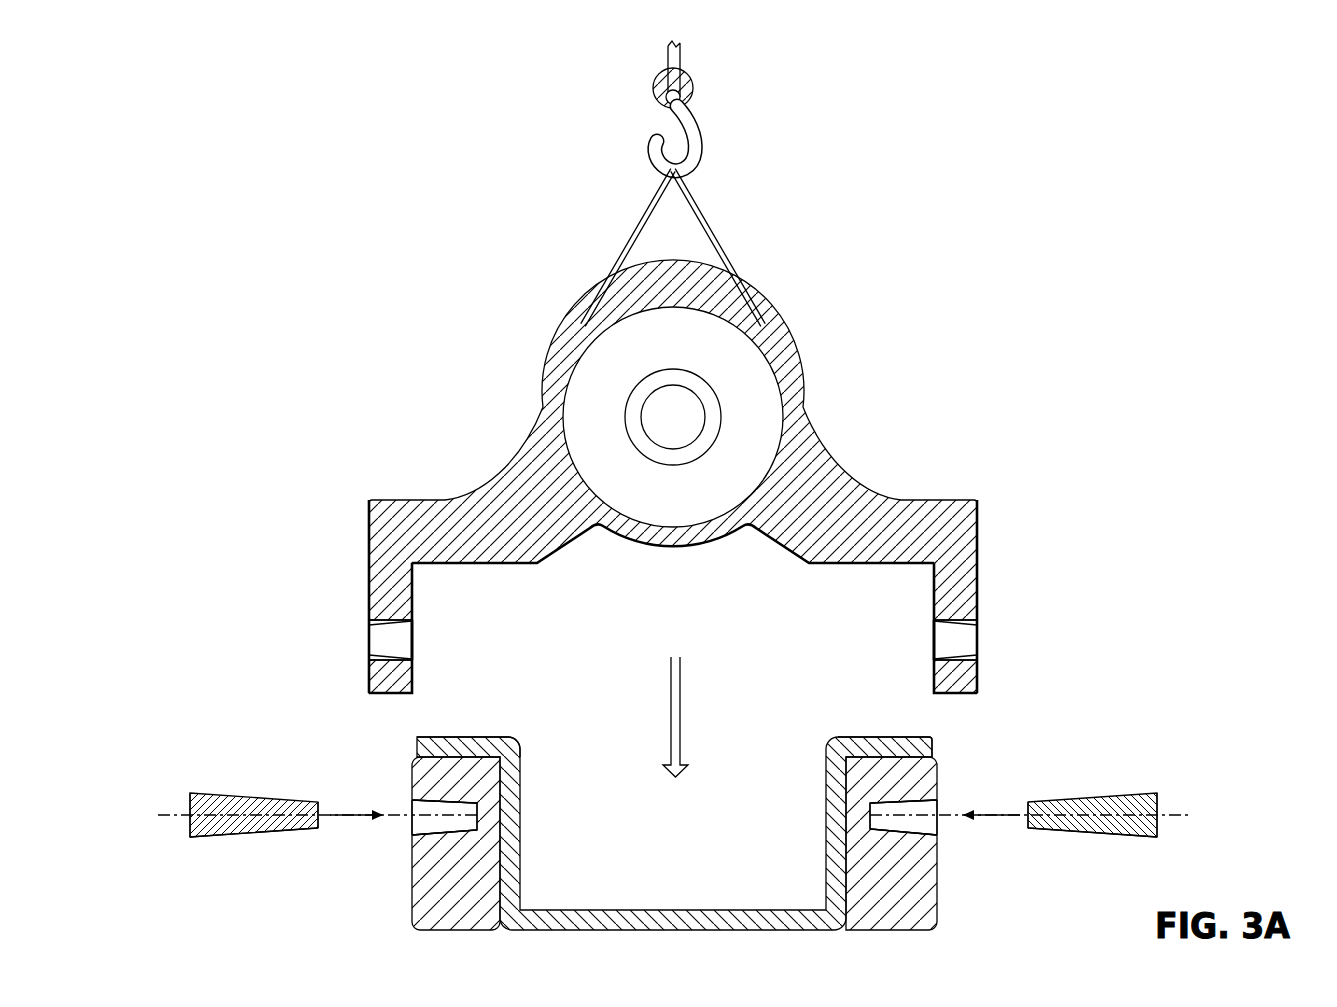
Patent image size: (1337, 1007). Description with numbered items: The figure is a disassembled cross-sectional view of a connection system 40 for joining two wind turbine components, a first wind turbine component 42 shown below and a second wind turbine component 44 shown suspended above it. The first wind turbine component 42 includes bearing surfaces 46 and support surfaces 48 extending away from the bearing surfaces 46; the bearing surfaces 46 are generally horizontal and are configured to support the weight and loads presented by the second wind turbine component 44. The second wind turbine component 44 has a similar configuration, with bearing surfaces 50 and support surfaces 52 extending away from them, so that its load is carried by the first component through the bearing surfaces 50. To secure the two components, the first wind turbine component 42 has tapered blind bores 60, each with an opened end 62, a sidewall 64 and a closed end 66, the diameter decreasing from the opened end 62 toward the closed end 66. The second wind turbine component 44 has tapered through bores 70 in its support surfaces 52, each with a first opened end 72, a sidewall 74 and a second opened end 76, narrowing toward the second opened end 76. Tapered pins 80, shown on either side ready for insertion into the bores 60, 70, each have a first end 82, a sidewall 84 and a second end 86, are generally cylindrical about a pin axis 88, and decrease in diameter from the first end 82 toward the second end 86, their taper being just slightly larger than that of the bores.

The connection system 40 is at (263, 618).
The first wind turbine component 42 is at (405, 939).
The second wind turbine component 44 is at (541, 276).
The bearing surfaces 46 is at (476, 735).
The support surfaces 48 is at (412, 878).
The bearing surfaces 50 is at (472, 565).
The support surfaces 52 is at (410, 578).
The bores 60 is at (406, 829).
The opened end 62 is at (410, 803).
The sidewall 64 is at (470, 798).
The closed end 66 is at (472, 824).
The bores 70 is at (366, 651).
The first opened end 72 is at (369, 625).
The sidewall 74 is at (386, 665).
The second opened end 76 is at (413, 640).
The pins 80 is at (228, 790).
The first end 82 is at (190, 836).
The sidewall 84 is at (222, 838).
The second end 86 is at (318, 829).
The pin axis 88 is at (165, 811).